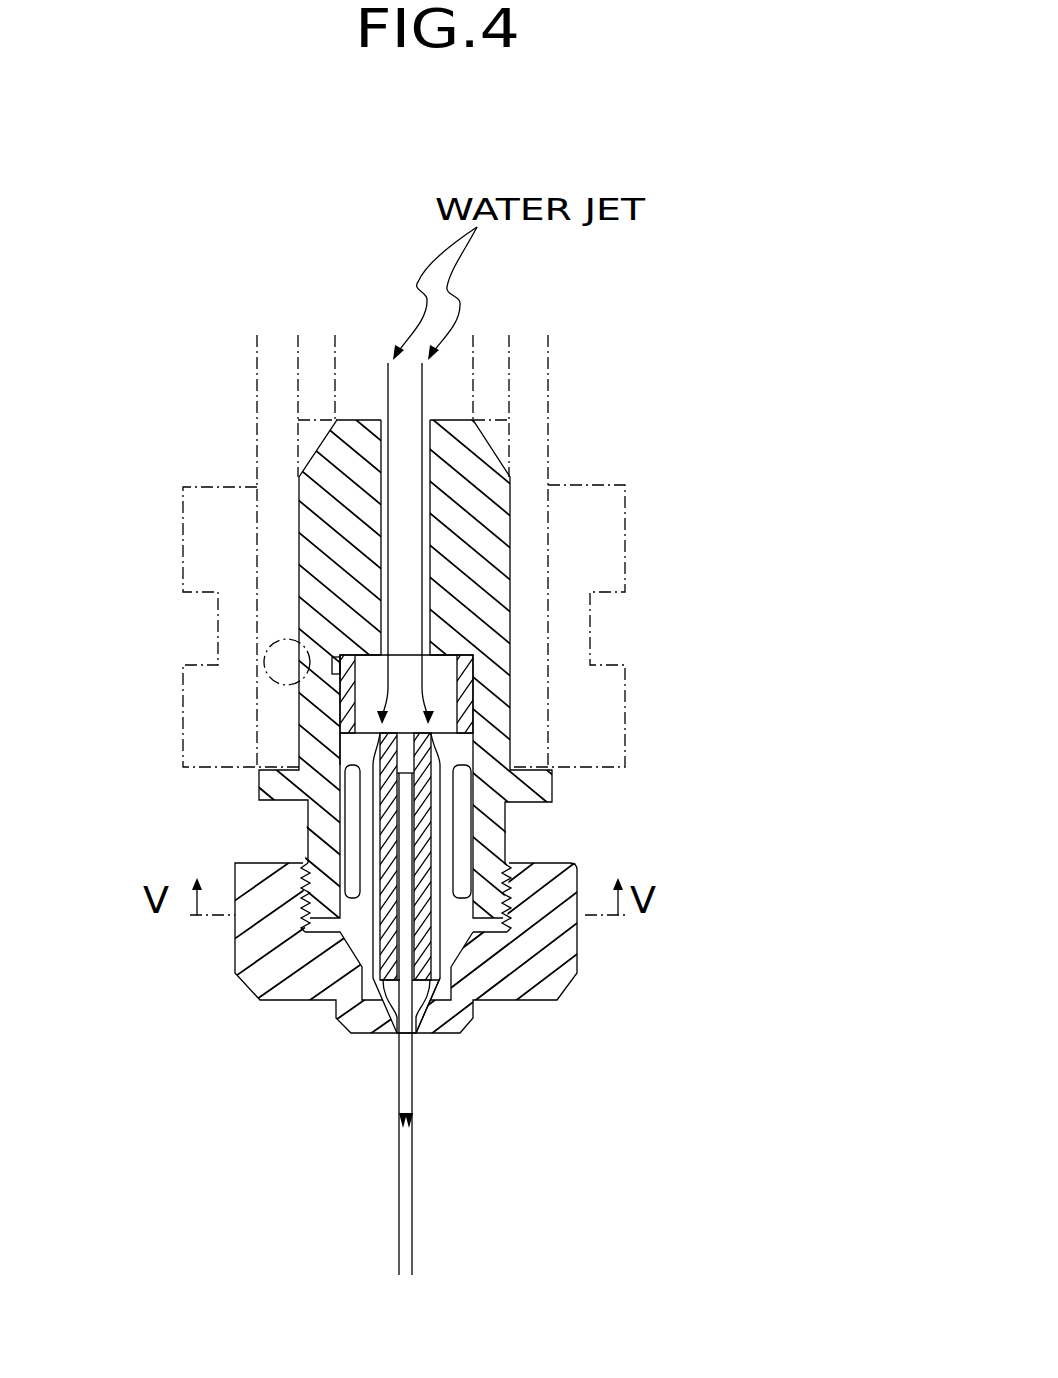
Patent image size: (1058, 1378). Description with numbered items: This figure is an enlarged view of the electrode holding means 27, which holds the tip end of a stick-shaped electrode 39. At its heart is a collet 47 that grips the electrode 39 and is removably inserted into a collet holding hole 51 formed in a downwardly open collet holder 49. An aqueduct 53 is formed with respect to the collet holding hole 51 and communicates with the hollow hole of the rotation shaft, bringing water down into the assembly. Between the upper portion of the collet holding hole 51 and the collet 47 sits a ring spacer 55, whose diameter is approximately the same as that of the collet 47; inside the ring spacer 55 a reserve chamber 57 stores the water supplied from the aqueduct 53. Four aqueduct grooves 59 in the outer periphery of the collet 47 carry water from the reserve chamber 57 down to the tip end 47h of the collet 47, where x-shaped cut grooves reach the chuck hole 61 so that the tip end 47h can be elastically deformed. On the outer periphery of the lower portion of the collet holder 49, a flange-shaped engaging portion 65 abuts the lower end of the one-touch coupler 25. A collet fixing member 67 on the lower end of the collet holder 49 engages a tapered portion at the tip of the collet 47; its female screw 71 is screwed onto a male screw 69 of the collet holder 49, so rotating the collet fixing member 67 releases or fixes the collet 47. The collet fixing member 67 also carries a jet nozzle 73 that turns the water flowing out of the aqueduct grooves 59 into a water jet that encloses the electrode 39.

The one-touch coupler 25 is at (545, 368).
The electrode holding means 27 is at (692, 891).
The electrode 39 is at (415, 1225).
The collet 47 is at (425, 848).
The tip end of the collet 47h is at (458, 942).
The collet holder 49 is at (477, 543).
The collet holding hole 51 is at (463, 805).
The aqueduct 53 is at (415, 512).
The ring spacer 55 is at (462, 690).
The reserve chamber 57 is at (360, 652).
The aqueduct grooves 59 is at (365, 832).
The chuck hole 61 is at (408, 753).
The flange-shaped engaging portion 65 is at (343, 748).
The collet fixing member 67 is at (560, 862).
The male screw 69 is at (305, 858).
The female screw 71 is at (505, 942).
The jet nozzle 73 is at (462, 1036).